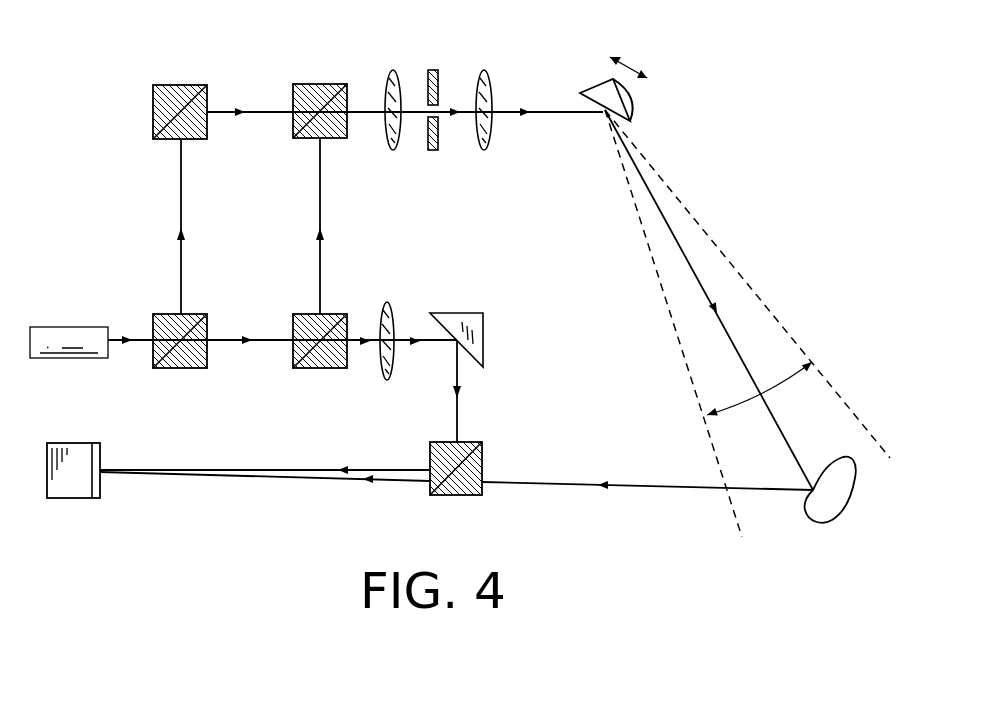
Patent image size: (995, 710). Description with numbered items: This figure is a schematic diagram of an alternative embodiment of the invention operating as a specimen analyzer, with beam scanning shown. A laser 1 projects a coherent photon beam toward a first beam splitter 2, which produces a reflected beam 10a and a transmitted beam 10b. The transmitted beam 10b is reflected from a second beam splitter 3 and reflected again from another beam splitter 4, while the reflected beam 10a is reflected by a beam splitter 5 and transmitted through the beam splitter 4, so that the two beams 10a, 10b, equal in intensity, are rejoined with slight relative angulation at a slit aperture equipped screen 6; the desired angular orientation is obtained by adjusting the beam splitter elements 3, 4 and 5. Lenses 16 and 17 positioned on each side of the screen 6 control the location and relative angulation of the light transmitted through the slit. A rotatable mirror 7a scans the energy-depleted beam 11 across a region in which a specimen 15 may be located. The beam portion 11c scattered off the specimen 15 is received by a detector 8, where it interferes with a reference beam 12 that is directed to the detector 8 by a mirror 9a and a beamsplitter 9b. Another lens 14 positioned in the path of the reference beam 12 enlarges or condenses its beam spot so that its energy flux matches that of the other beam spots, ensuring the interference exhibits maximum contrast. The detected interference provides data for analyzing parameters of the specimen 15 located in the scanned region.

The laser 1 is at (68, 327).
The first beam splitter 2 is at (178, 368).
The second beam splitter 3 is at (318, 368).
The beam splitter 4 is at (322, 84).
The beam splitter 5 is at (152, 117).
The slit aperture equipped screen 6 is at (433, 70).
The rotatable mirror 7a is at (634, 104).
The detector 8 is at (70, 498).
The mirror 9a is at (485, 325).
The beamsplitter 9b is at (485, 455).
The reflected beam 10a is at (268, 111).
The transmitted beam 10b is at (320, 278).
The energy-depleted beam 11 is at (567, 113).
The beam portion 11c is at (663, 487).
The reference beam 12 is at (398, 466).
The lens 14 is at (388, 303).
The specimen 15 is at (835, 521).
The lens 16 is at (393, 152).
The lens 17 is at (484, 152).